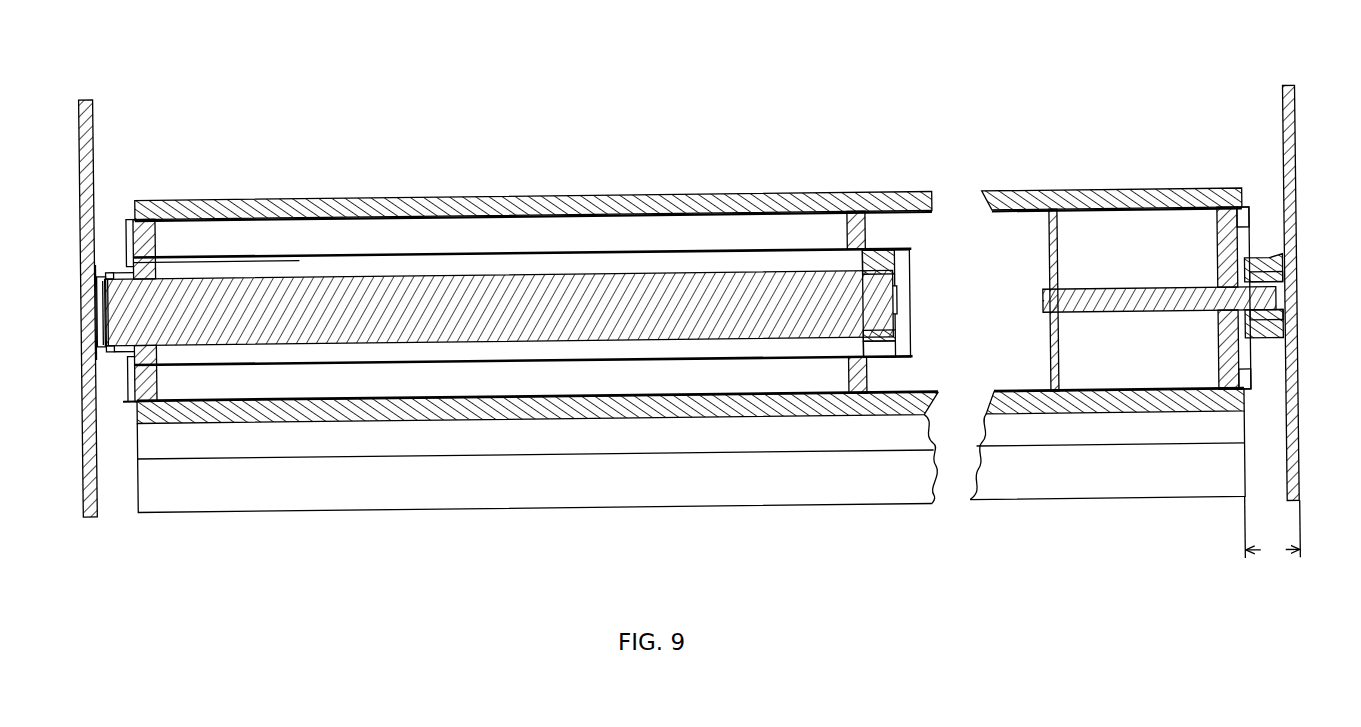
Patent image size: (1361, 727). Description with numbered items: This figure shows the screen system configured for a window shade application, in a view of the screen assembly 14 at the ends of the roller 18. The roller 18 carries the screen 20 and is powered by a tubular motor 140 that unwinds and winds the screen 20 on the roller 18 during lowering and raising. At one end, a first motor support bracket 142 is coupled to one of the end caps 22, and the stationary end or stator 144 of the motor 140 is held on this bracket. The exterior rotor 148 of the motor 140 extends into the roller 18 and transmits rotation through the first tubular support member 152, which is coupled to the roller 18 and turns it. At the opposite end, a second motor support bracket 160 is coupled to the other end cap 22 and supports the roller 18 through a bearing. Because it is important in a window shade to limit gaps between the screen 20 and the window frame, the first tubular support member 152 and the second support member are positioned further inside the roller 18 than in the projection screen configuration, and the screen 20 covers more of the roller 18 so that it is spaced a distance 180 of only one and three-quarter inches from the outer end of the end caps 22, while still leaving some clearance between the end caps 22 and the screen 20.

The screen assembly 14 is at (1091, 64).
The end caps 22 is at (97, 120).
The screen 20 is at (723, 212).
The roller 18 is at (522, 217).
The first tubular support member 152 is at (273, 242).
The tubular motor 140 is at (592, 350).
The first motor support bracket 142 is at (99, 248).
The stator 144 is at (160, 274).
The exterior rotor 148 is at (793, 291).
The second motor support bracket 160 is at (1278, 365).
The distance 180 is at (1280, 560).